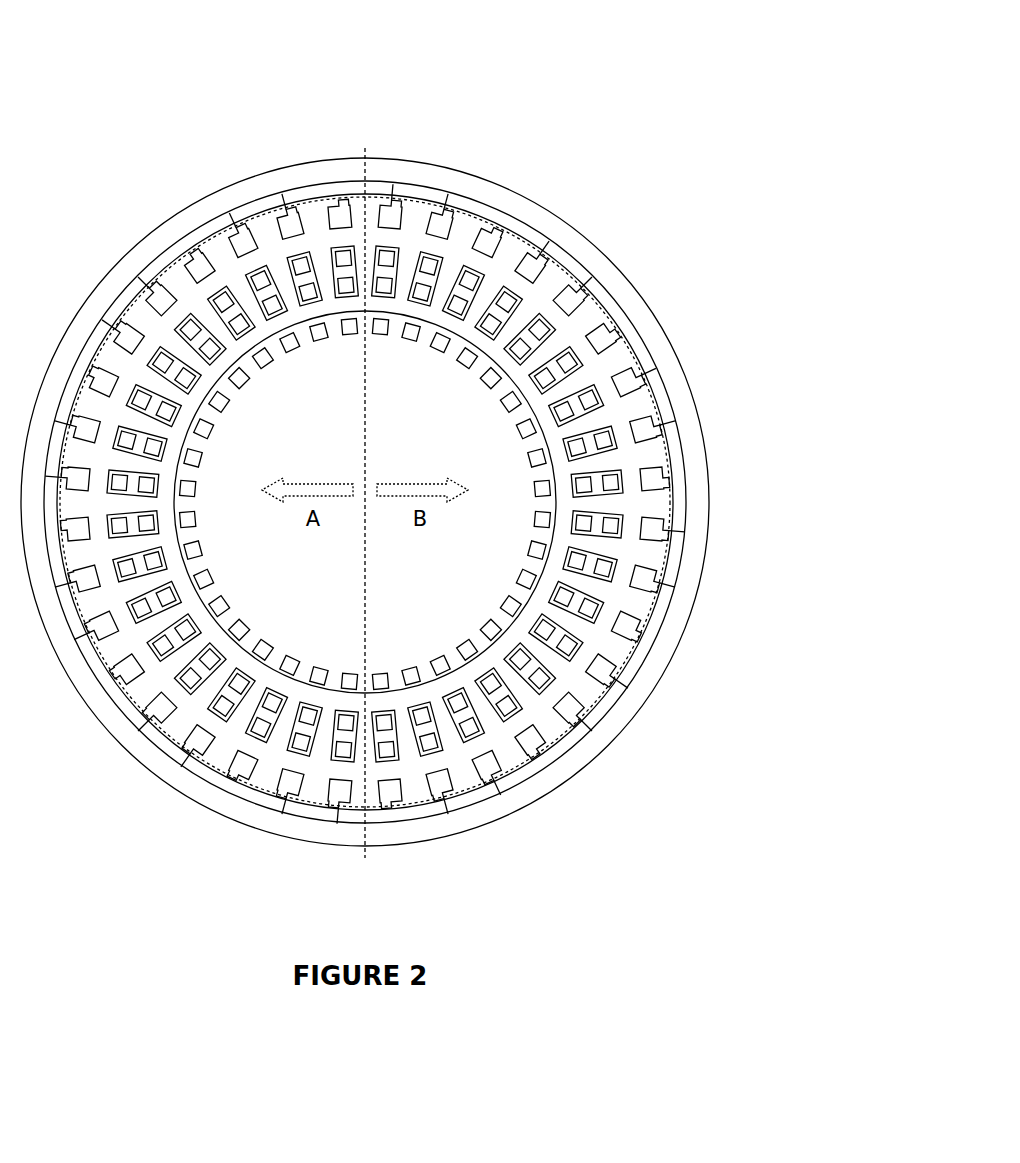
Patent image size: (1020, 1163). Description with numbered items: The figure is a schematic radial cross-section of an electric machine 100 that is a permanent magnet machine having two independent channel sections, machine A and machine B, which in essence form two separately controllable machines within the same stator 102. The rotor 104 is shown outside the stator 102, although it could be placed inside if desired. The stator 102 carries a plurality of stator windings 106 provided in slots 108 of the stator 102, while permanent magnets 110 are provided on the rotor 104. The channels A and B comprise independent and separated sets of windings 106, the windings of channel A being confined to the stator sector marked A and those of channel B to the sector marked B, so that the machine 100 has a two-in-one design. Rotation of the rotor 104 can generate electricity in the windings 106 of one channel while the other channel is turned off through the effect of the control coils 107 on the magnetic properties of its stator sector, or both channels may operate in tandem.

The electric machine 100 is at (562, 97).
The stator 102 is at (497, 265).
The rotor 104 is at (607, 257).
The stator windings 106 is at (587, 287).
The control coils 107 is at (710, 247).
The slots 108 is at (645, 378).
The permanent magnets 110 is at (677, 470).